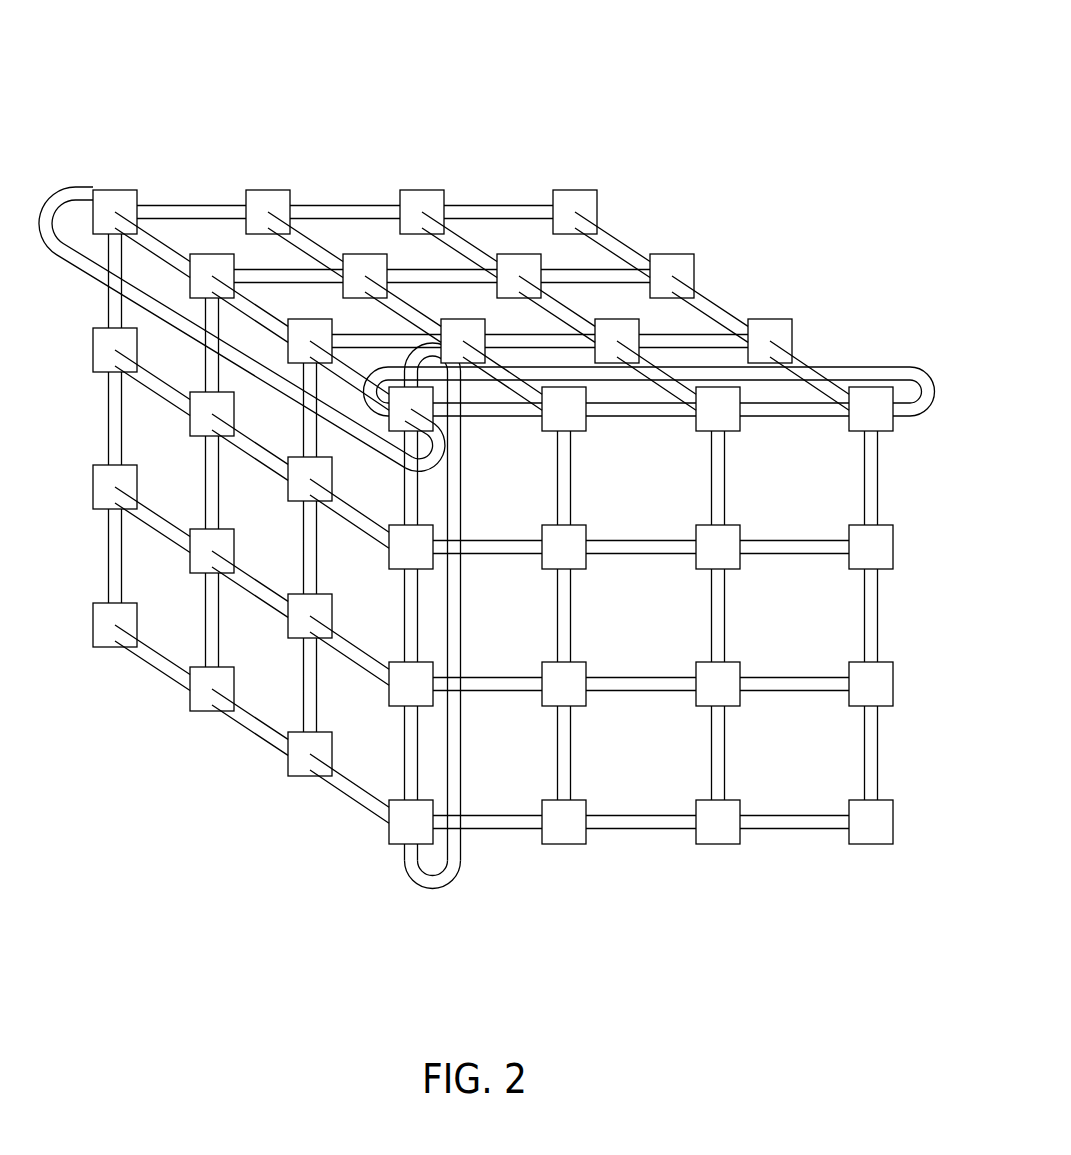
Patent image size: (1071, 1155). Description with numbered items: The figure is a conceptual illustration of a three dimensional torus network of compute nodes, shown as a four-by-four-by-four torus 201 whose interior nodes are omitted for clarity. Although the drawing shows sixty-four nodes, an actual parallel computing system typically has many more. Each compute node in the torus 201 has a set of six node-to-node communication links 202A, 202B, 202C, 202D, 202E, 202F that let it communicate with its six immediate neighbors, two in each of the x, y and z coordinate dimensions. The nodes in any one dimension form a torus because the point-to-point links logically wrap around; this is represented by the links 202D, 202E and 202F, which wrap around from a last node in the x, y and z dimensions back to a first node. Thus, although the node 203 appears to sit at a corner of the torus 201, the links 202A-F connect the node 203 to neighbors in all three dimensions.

The torus 201 is at (648, 110).
The node-to-node communication link 202A is at (484, 417).
The node-to-node communication link 202B is at (418, 502).
The node-to-node communication link 202C is at (366, 381).
The node-to-node communication link 202D is at (896, 367).
The node-to-node communication link 202E is at (432, 889).
The node-to-node communication link 202F is at (52, 187).
The node 203 is at (398, 430).